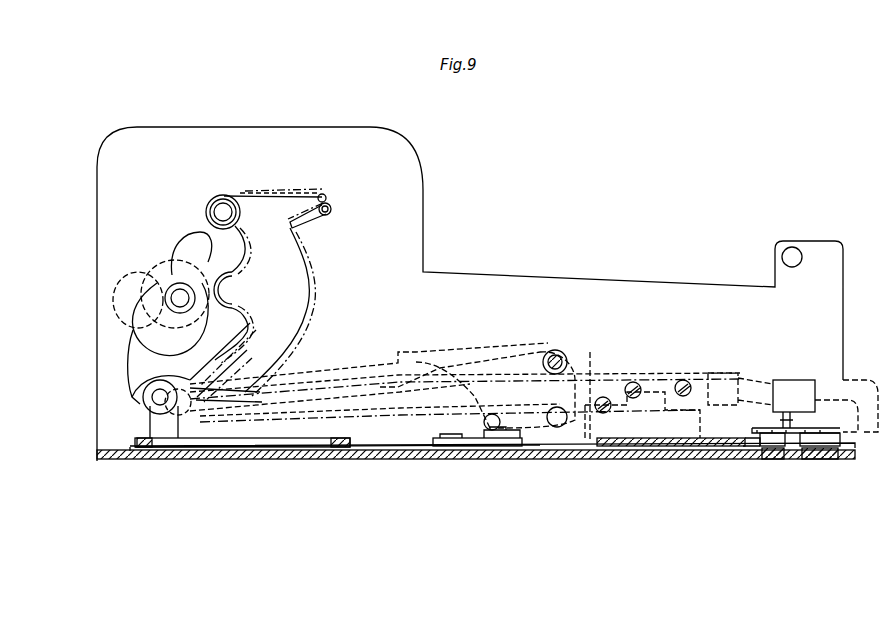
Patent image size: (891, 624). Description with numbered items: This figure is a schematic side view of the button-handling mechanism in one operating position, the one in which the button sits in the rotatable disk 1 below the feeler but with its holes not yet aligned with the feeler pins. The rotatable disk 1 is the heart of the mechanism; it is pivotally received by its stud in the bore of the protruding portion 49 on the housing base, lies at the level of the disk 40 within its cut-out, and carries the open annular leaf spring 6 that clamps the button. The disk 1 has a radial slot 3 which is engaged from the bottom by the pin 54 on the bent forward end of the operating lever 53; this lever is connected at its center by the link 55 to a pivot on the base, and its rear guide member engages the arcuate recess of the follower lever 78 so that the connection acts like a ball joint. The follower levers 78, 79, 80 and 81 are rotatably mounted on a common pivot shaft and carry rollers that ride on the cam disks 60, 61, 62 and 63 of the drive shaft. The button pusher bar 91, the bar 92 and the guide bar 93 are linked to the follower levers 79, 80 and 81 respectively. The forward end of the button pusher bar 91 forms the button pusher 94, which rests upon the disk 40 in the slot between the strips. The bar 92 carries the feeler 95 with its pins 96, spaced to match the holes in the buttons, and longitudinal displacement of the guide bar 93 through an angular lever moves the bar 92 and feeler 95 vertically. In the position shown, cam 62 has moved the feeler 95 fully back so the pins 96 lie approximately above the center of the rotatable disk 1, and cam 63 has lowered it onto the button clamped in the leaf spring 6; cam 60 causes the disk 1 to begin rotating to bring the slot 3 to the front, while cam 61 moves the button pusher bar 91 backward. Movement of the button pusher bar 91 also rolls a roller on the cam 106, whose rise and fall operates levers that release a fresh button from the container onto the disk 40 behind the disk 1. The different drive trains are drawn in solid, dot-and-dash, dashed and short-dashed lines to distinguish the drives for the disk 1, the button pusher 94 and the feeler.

The rotatable disk 1 is at (855, 447).
The radial slot 3 is at (756, 460).
The leaf spring 6 is at (778, 428).
The disk 40 is at (680, 440).
The protruding portion 49 is at (808, 458).
The operating lever 53 is at (386, 446).
The pin 54 is at (735, 460).
The link 55 is at (466, 446).
The cam disk 60 is at (148, 344).
The cam disk 61 is at (196, 240).
The cam disk 62 is at (126, 284).
The cam disk 63 is at (158, 275).
The follower lever 78 is at (318, 220).
The follower lever 79 is at (330, 196).
The follower lever 80 is at (333, 211).
The follower lever 81 is at (327, 191).
The button pusher bar 91 is at (594, 396).
The bar 92 is at (752, 402).
The guide bar 93 is at (540, 350).
The button pusher 94 is at (660, 432).
The feeler 95 is at (793, 392).
The pins 96 is at (795, 425).
The cam 106 is at (545, 388).